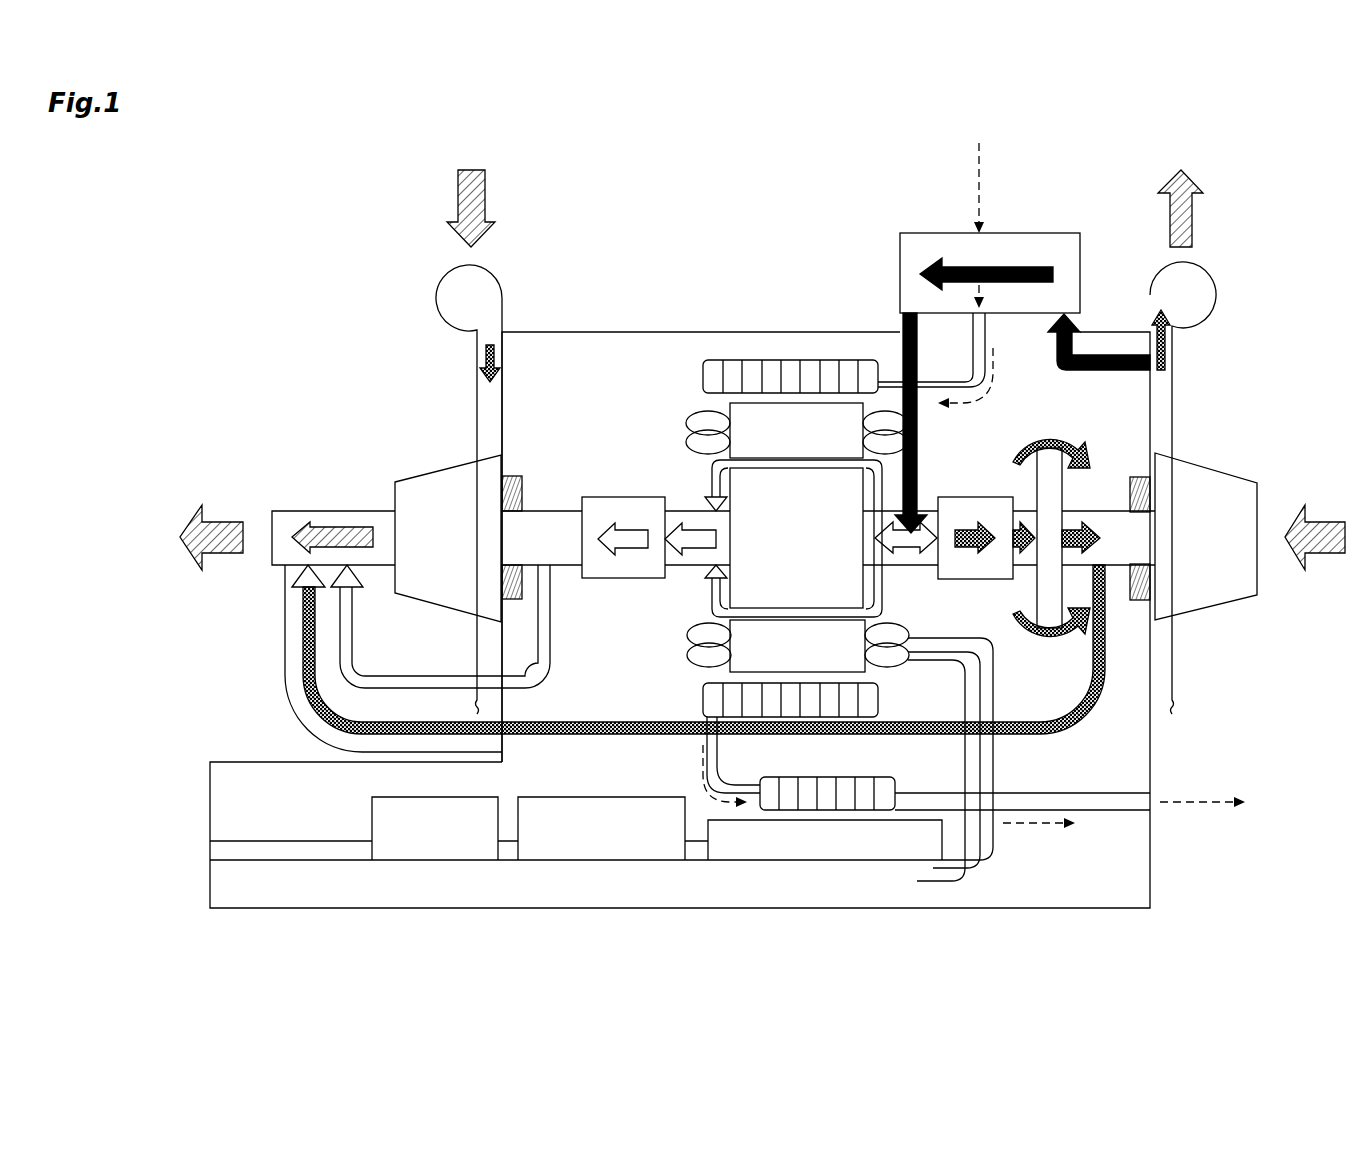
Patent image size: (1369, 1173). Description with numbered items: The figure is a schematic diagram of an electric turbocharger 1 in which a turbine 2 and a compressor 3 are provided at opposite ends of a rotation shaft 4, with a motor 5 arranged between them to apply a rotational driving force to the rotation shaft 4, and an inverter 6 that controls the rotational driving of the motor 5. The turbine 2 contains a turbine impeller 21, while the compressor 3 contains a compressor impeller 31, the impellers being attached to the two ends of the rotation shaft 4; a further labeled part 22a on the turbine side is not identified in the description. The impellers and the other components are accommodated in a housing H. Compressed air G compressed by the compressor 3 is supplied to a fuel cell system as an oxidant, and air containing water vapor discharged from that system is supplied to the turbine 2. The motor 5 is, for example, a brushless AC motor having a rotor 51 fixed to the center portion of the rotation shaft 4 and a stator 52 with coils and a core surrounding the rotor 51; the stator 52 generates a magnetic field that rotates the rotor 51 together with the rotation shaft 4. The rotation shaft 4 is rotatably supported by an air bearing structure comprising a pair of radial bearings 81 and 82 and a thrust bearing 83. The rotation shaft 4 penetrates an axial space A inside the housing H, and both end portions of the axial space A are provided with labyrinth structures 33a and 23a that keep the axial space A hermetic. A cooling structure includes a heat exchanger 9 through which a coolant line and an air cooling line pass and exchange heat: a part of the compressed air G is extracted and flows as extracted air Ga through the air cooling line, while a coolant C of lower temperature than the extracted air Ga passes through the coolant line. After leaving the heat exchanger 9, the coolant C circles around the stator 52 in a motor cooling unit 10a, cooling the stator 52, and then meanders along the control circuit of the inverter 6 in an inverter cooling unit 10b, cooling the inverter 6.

The electric turbocharger 1 is at (250, 217).
The turbine 2 is at (441, 287).
The compressor 3 is at (1216, 303).
The rotation shaft 4 is at (543, 506).
The motor 5 is at (727, 257).
The inverter 6 is at (598, 910).
The heat exchanger 9 is at (1064, 233).
The motor cooling unit 10a is at (795, 360).
The inverter cooling unit 10b is at (825, 812).
The turbine impeller 21 is at (416, 480).
The compressor outlet passage 22a is at (383, 550).
The labyrinth structure 23a is at (510, 476).
The compressor impeller 31 is at (1240, 483).
The labyrinth structure 33a is at (1160, 475).
The rotor 51 is at (728, 437).
The stator 52 is at (750, 483).
The radial bearing 81 is at (965, 497).
The radial bearing 82 is at (636, 499).
The thrust bearing 83 is at (1067, 491).
The housing H is at (560, 300).
The compressed air G is at (1194, 227).
The extracted air Ga is at (955, 262).
The coolant C is at (982, 165).
The axial space A is at (910, 569).